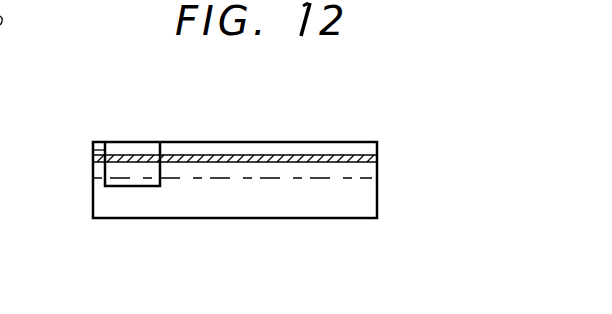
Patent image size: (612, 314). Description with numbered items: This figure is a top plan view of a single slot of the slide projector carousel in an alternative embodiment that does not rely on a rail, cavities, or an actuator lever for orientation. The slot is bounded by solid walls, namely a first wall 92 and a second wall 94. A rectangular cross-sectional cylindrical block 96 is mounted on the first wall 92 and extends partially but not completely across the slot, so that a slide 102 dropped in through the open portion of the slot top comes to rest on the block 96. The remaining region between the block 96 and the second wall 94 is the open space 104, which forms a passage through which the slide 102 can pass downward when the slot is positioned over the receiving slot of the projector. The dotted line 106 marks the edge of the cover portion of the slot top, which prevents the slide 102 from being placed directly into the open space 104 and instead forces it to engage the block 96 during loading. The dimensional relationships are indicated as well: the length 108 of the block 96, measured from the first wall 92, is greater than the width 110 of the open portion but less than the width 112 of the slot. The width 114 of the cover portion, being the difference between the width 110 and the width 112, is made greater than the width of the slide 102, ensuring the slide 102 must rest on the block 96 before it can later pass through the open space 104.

The first wall 92 is at (275, 142).
The second wall 94 is at (264, 218).
The rectangular cross-sectional cylindrical block 96 is at (135, 151).
The slide 102 is at (332, 154).
The open space 104 is at (181, 200).
The dotted line 106 is at (324, 178).
The length of the block 108 is at (94, 184).
The width of the open portion 110 is at (195, 172).
The width of the slot 112 is at (387, 140).
The width of the cover portion 114 is at (229, 183).